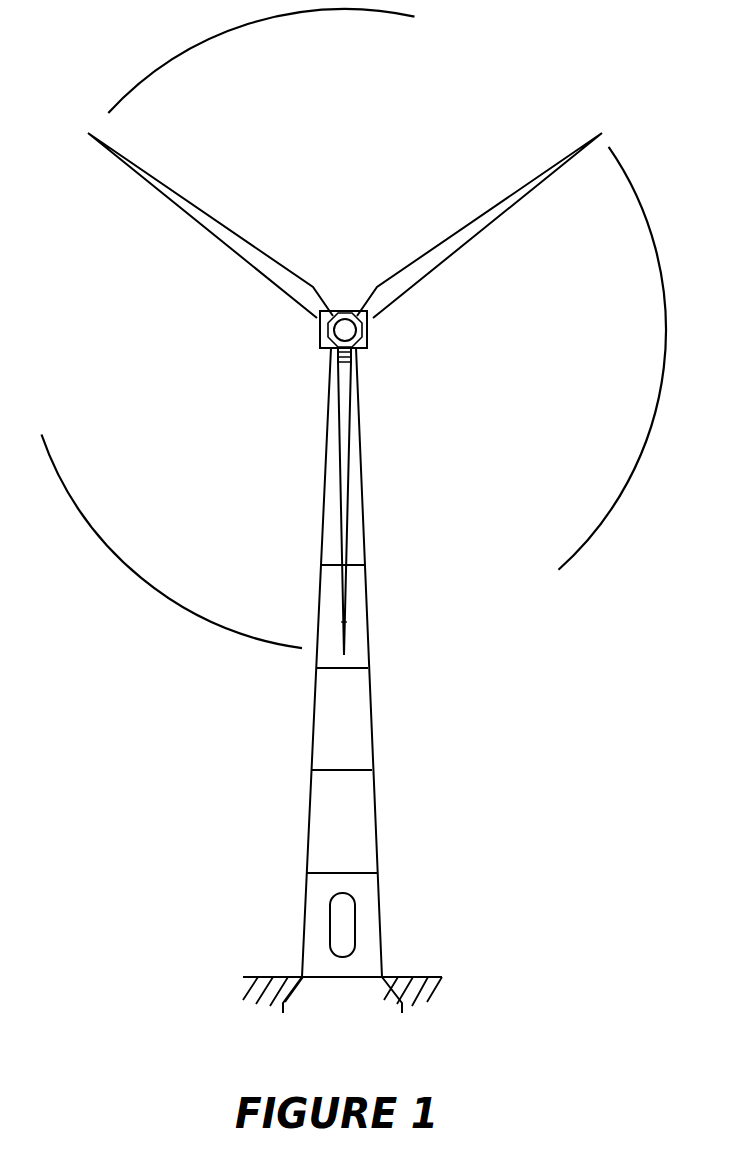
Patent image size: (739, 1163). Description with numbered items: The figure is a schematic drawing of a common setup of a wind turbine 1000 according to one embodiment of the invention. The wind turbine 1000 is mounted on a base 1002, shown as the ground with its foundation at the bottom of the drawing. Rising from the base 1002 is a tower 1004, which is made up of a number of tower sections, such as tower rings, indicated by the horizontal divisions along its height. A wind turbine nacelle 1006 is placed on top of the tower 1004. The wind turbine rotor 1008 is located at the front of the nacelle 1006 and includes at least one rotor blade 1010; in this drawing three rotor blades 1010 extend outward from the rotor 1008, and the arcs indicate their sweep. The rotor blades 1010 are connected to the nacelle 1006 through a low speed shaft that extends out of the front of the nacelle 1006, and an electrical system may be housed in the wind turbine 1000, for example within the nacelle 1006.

The wind turbine 1000 is at (266, 794).
The base 1002 is at (298, 997).
The tower 1004 is at (365, 720).
The wind turbine nacelle 1006 is at (368, 333).
The wind turbine rotor 1008 is at (336, 337).
The rotor blade 1010 is at (343, 542).